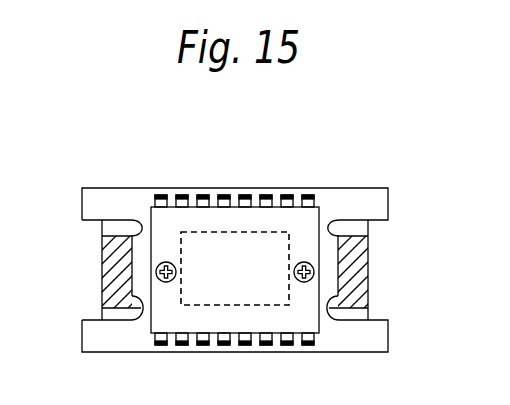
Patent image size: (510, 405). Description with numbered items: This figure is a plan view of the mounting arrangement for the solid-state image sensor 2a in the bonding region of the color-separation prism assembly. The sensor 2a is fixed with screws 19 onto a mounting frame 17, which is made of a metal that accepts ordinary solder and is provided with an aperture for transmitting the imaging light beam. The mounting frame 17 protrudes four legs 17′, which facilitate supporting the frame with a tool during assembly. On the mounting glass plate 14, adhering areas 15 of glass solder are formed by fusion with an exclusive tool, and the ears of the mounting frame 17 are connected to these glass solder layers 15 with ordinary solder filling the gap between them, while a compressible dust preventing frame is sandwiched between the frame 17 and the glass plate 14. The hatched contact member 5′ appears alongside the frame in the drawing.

The solid-state image sensor 2a is at (318, 210).
The contact terminal 5′ is at (360, 285).
The mounting glass plate 14 is at (121, 268).
The adhering area of glass solder 15 is at (103, 245).
The mounting frame 17 is at (236, 253).
The legs 17′ is at (93, 200).
The screws 19 is at (166, 282).